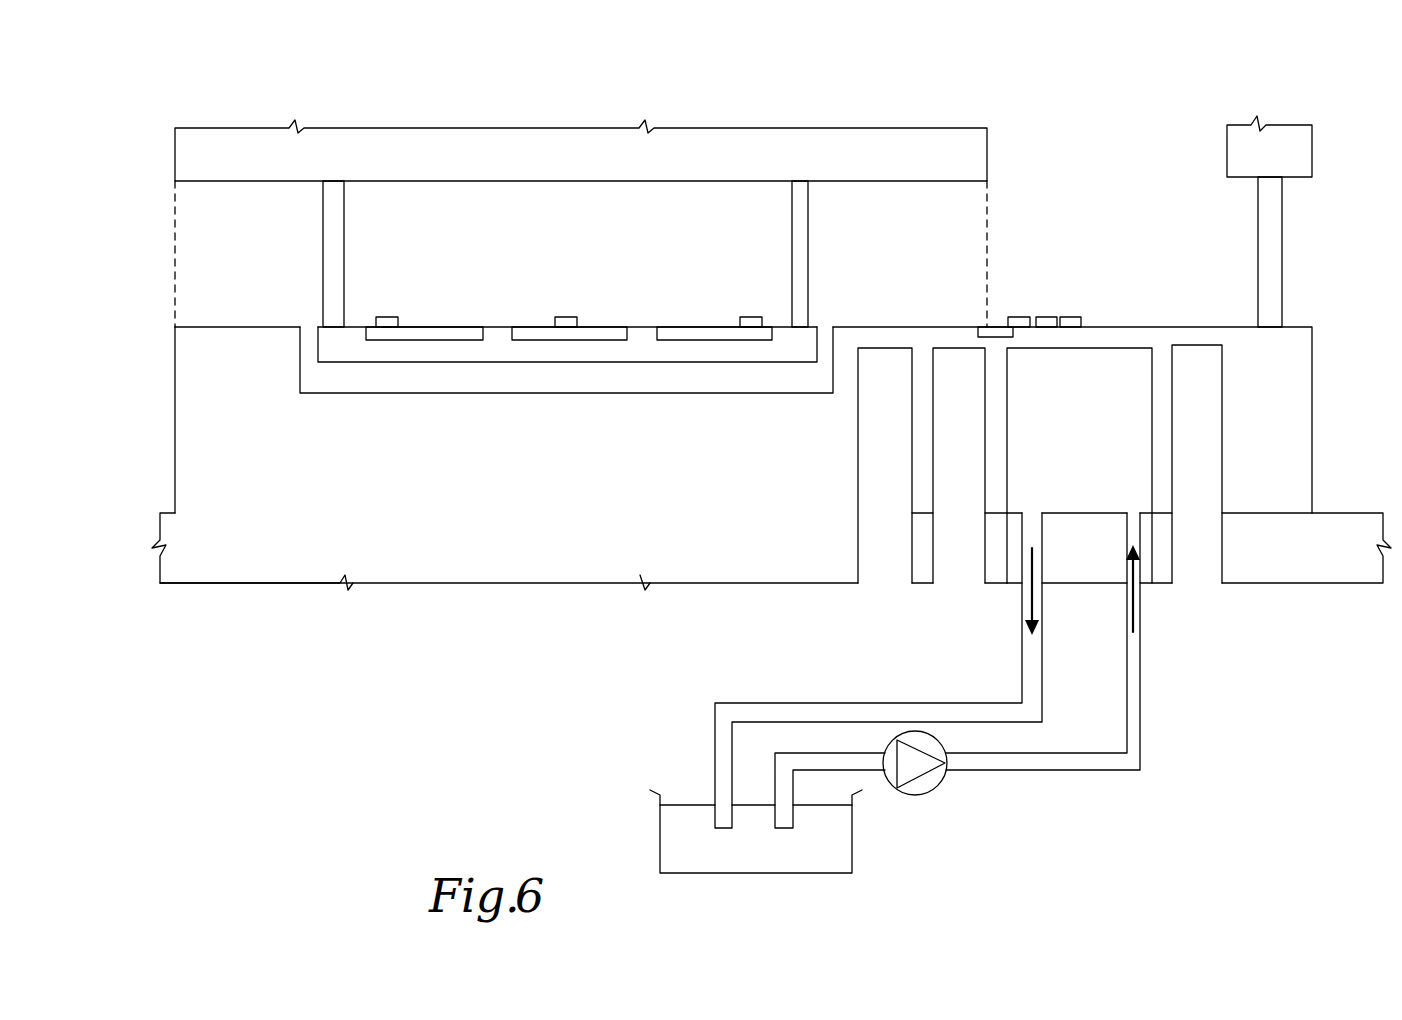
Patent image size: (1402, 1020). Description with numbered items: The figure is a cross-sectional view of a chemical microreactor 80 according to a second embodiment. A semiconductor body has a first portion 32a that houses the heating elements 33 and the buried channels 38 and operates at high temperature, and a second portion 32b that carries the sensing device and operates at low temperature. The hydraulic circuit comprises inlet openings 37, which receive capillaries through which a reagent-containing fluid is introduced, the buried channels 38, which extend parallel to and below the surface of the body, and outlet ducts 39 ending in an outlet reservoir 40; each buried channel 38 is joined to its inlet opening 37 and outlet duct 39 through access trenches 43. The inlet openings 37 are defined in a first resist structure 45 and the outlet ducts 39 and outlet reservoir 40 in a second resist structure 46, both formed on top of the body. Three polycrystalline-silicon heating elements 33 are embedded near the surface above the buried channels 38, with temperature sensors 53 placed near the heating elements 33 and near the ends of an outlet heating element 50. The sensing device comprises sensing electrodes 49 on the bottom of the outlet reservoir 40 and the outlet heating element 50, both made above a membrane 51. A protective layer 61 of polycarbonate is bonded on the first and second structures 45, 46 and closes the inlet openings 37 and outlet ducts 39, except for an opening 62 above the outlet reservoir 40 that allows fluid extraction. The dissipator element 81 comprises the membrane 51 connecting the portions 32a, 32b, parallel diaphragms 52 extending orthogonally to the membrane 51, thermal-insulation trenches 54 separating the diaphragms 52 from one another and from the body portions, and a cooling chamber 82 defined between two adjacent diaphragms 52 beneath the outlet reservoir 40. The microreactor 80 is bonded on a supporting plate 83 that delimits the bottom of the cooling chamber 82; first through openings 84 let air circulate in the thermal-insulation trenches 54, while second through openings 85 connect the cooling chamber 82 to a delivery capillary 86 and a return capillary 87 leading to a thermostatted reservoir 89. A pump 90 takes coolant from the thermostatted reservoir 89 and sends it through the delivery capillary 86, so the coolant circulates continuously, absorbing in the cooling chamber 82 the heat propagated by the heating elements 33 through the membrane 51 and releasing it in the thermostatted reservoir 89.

The first portion of the semiconductor body 32a is at (226, 490).
The second portion of the semiconductor body 32b is at (1234, 495).
The heating elements 33 is at (437, 334).
The inlet openings 37 is at (224, 245).
The buried channels 38 is at (603, 389).
The outlet ducts 39 is at (955, 210).
The outlet reservoir 40 is at (1148, 205).
The access trenches 43 is at (306, 341).
The first resist structure 45 is at (344, 228).
The second resist structure 46 is at (1283, 215).
The sensing electrodes 49 is at (1046, 318).
The outlet heating element 50 is at (1010, 337).
The membrane 51 is at (940, 327).
The diaphragms 52 is at (925, 462).
The temperature sensors 53 is at (390, 318).
The thermal-insulation trenches 54 is at (869, 417).
The protective layer 61 is at (214, 167).
The opening 62 is at (1069, 200).
The chemical microreactor 80 is at (531, 675).
The dissipator element 81 is at (948, 516).
The cooling chamber 82 is at (1020, 428).
The supporting plate 83 is at (285, 563).
The first through openings 84 is at (880, 568).
The second through openings 85 is at (1030, 523).
The delivery capillary 86 is at (1142, 722).
The return capillary 87 is at (1042, 672).
The thermostatted reservoir 89 is at (672, 838).
The pump 90 is at (925, 795).